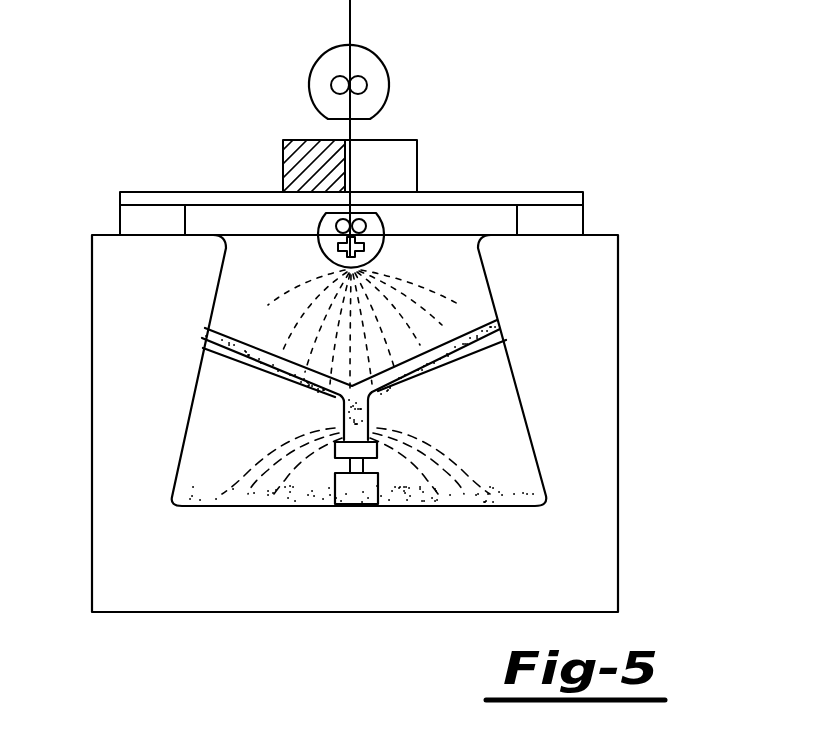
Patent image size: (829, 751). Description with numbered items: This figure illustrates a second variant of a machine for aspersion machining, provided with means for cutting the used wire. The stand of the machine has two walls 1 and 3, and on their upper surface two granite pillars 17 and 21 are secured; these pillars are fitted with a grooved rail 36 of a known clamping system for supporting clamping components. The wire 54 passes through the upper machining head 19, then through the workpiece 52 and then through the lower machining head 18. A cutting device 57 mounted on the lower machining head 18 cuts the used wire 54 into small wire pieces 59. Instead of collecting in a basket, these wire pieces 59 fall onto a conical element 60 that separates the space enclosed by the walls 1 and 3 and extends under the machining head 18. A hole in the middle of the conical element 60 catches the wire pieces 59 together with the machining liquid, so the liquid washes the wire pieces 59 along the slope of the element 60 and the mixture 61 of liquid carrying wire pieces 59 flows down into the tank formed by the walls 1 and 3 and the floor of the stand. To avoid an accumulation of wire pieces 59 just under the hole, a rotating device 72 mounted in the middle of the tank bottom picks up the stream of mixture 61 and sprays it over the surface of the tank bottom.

The wall 1 is at (130, 308).
The wall 3 is at (577, 292).
The granite pillar 17 is at (148, 223).
The lower machining head 18 is at (320, 250).
The upper machining head 19 is at (373, 71).
The granite pillar 21 is at (562, 219).
The grooved rail 36 is at (583, 197).
The workpiece 52 is at (300, 152).
The wire 54 is at (352, 128).
The cutting device 57 is at (365, 268).
The small wire pieces 59 is at (523, 492).
The conical element 60 is at (462, 354).
The mixture 61 is at (430, 381).
The rotating device 72 is at (354, 491).